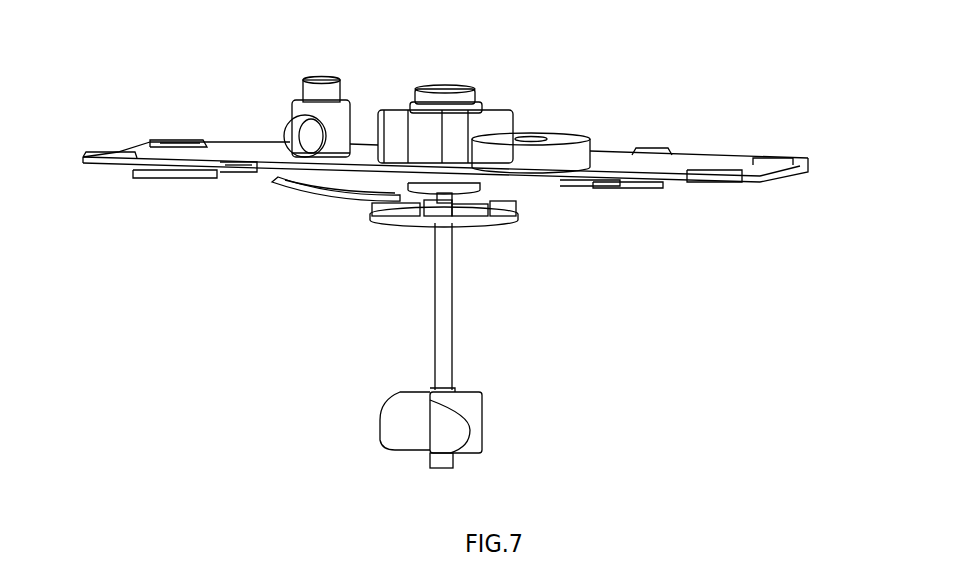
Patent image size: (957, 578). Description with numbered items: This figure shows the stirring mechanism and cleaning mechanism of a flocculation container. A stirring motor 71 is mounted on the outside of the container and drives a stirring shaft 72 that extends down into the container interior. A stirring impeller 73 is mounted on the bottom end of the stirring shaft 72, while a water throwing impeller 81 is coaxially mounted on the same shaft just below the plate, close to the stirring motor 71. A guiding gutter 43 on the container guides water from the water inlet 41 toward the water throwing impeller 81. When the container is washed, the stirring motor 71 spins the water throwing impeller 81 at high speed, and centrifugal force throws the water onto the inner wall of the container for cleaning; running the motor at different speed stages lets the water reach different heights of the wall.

The water inlet 41 is at (306, 130).
The guiding gutter 43 is at (337, 188).
The stirring motor 71 is at (494, 110).
The stirring shaft 72 is at (447, 315).
The stirring impeller 73 is at (412, 428).
The water throwing impeller 81 is at (402, 220).